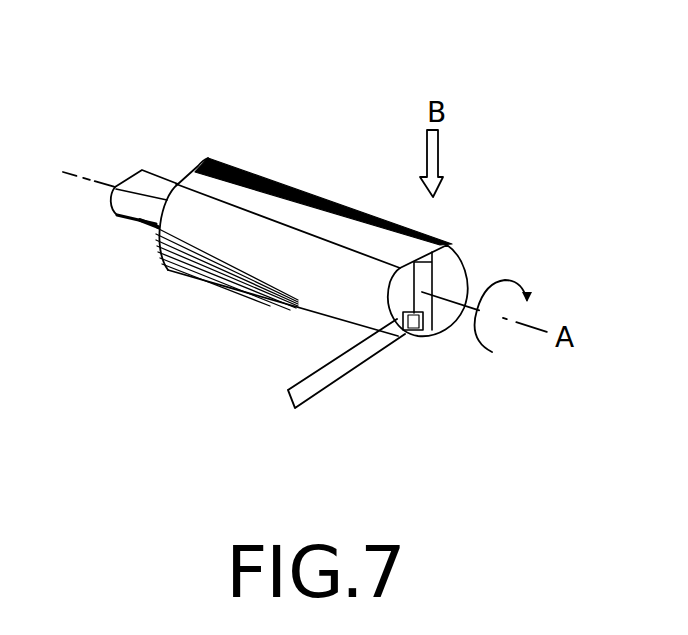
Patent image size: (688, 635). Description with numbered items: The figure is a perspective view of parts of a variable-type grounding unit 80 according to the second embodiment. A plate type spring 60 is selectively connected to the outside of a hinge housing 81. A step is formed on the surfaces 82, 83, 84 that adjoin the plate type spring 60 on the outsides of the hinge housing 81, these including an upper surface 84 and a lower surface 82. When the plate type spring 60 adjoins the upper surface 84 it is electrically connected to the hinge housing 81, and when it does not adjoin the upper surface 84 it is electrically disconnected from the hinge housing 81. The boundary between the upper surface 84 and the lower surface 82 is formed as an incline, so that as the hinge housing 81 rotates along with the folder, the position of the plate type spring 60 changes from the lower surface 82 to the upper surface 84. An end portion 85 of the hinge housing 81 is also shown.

The variable-type grounding unit 80 is at (320, 153).
The hinge housing 81 is at (257, 273).
The lower surface 82 is at (413, 291).
The surface adjoining the plate spring 83 is at (434, 329).
The upper surface 84 is at (450, 268).
The shaft end portion 85 is at (132, 202).
The plate type spring 60 is at (374, 355).